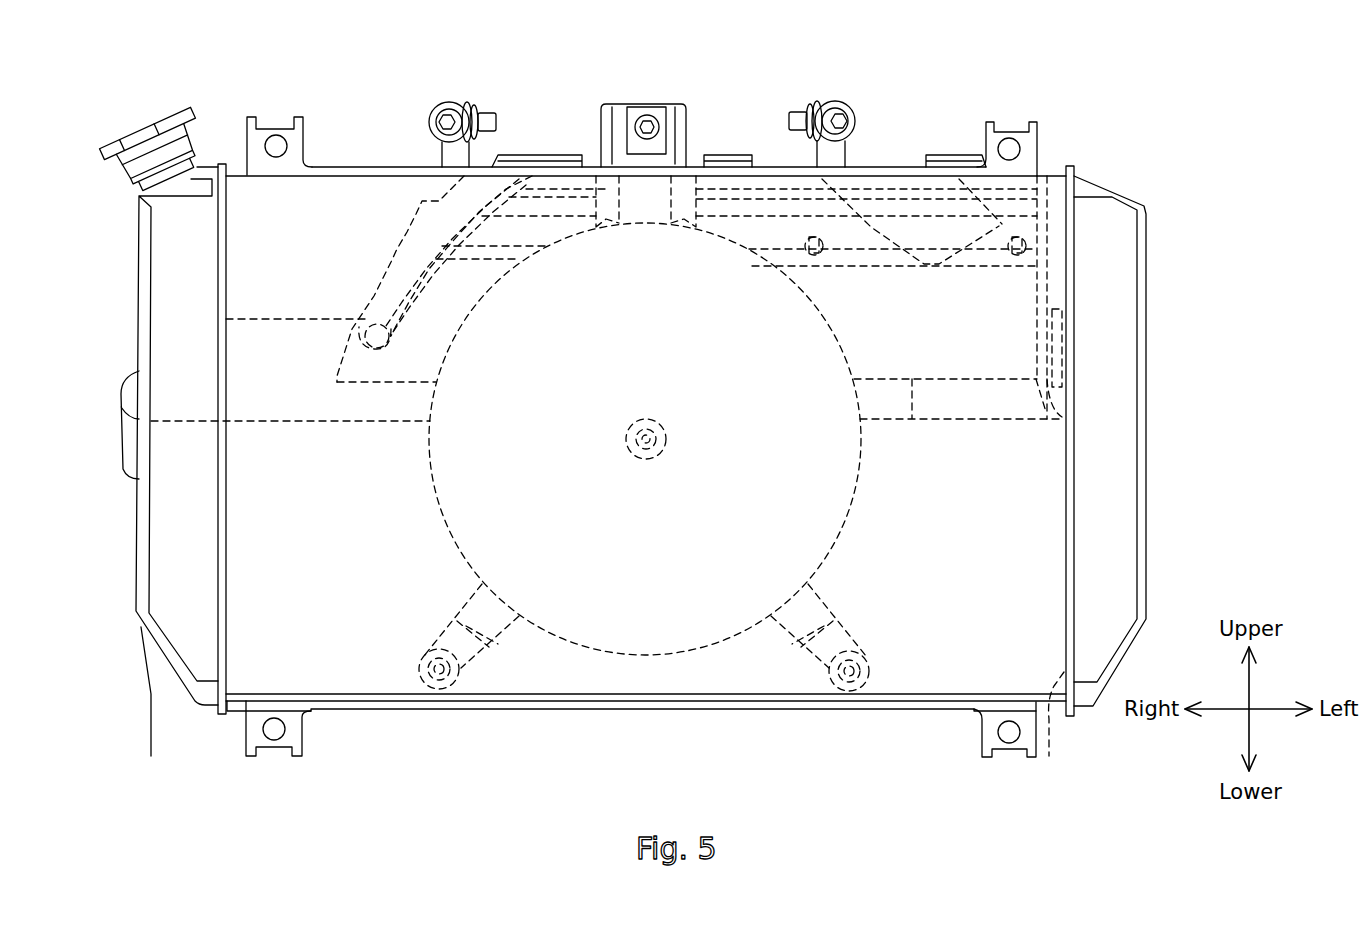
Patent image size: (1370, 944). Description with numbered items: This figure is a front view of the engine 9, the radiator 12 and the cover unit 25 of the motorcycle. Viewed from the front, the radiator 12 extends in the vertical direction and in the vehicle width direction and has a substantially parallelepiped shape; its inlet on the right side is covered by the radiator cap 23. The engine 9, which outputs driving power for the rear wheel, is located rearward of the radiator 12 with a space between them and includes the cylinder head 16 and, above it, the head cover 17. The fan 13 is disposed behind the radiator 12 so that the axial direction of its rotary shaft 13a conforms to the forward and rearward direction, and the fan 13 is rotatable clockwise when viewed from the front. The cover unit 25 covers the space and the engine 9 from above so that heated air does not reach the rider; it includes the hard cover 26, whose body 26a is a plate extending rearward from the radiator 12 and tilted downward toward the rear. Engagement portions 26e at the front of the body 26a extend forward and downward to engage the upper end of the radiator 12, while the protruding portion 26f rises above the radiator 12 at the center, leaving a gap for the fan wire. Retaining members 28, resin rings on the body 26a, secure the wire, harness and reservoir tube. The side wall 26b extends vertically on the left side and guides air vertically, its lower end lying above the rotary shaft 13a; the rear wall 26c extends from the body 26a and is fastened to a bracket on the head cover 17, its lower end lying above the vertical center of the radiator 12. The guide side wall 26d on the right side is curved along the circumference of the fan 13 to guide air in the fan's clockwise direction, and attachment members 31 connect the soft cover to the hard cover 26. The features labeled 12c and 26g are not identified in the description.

The engine 9 is at (120, 442).
The radiator 12 is at (1130, 187).
The tank portion 12c is at (140, 284).
The fan 13 is at (850, 556).
The rotary shaft 13a is at (662, 428).
The cylinder head 16 is at (124, 512).
The head cover 17 is at (140, 372).
The radiator cap 23 is at (105, 142).
The cover unit 25 is at (692, 131).
The hard cover 26 is at (593, 168).
The body 26a is at (540, 155).
The side wall 26b is at (1060, 280).
The rear wall 26c is at (913, 420).
The guide side wall 26d is at (387, 280).
The engagement portions 26e is at (765, 158).
The protruding portion 26f is at (690, 105).
The shroud bolt 26g is at (942, 268).
The retaining members 28 is at (822, 255).
The attachment members 31 is at (1053, 250).